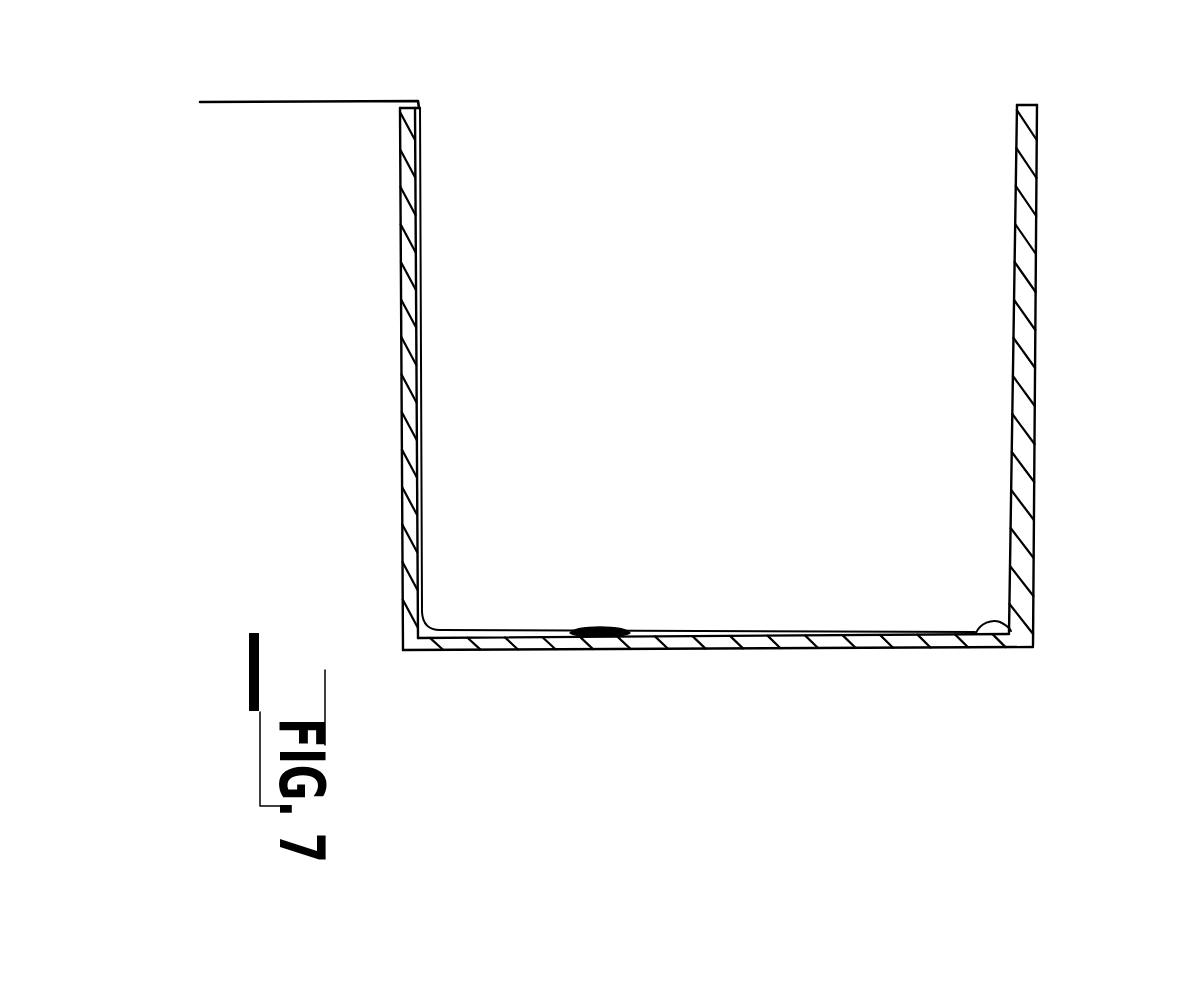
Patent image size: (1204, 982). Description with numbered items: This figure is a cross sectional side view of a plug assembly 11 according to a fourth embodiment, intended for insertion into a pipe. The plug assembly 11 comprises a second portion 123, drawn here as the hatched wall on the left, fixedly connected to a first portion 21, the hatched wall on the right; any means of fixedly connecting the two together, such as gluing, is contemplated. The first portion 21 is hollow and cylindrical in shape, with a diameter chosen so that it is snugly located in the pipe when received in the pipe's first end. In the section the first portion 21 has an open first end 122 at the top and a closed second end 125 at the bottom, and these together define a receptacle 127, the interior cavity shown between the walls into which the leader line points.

The plug assembly 11 is at (655, 56).
The first portion 21 is at (1027, 433).
The open first end 122 is at (892, 100).
The second portion 123 is at (422, 270).
The closed second end 125 is at (1033, 646).
The receptacle 127 is at (900, 325).